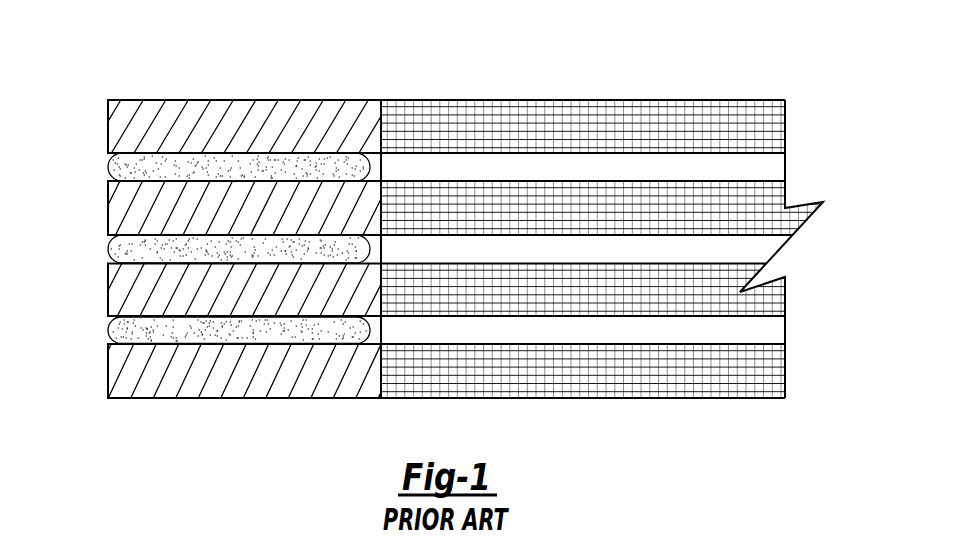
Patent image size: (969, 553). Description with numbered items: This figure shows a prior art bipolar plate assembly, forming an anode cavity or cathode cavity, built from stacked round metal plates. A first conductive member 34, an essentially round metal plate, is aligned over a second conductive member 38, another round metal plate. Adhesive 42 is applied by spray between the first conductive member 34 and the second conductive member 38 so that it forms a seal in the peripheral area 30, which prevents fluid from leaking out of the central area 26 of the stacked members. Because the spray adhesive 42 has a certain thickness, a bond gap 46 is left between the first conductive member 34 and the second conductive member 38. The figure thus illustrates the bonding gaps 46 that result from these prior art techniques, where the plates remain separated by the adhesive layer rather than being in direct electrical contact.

The central area 26 is at (605, 100).
The peripheral area 30 is at (237, 99).
The first conductive member 34 is at (120, 124).
The second conductive member 38 is at (120, 210).
The adhesive 42 is at (118, 170).
The bond gap 46 is at (772, 169).